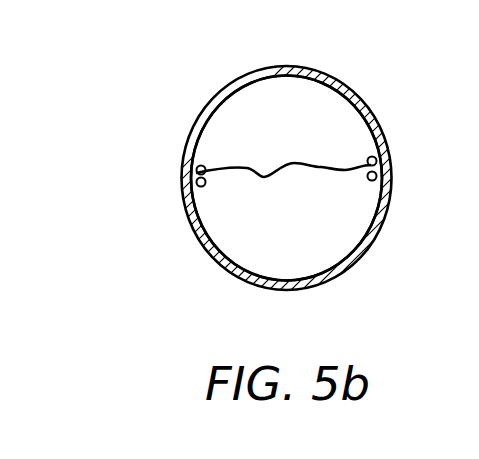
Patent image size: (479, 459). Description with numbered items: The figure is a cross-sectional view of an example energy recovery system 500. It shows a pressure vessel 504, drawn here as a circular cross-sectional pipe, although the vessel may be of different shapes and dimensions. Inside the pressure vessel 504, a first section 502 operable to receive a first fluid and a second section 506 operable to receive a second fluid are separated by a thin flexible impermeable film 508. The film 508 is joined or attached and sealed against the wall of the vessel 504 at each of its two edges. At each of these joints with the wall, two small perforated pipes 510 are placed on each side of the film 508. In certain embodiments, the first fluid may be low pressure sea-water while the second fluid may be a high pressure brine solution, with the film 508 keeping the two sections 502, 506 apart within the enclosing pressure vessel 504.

The energy recovery system 500 is at (90, 70).
The first section 502 is at (340, 118).
The pressure vessel 504 is at (392, 188).
The second section 506 is at (220, 220).
The flexible impermeable film 508 is at (323, 170).
The perforated pipes 510 is at (193, 175).